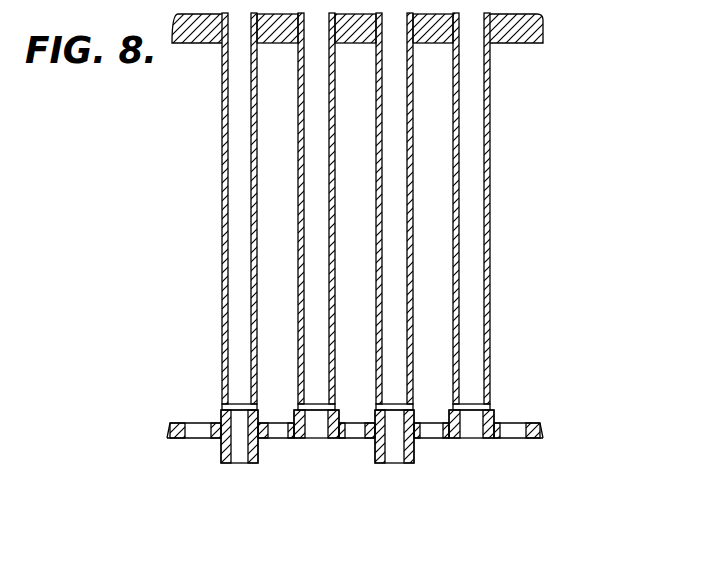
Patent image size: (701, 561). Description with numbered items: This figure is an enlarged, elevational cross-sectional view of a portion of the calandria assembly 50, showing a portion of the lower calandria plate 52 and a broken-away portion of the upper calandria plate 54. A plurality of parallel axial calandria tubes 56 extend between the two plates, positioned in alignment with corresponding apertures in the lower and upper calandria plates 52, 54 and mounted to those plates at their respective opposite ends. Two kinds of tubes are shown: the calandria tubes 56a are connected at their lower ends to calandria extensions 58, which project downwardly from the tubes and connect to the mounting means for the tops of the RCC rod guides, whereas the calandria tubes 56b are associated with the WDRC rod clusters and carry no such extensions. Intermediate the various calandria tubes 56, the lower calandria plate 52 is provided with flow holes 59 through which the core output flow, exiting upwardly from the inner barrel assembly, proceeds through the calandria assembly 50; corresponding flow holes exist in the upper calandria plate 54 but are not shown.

The calandria assembly 50 is at (542, 167).
The lower calandria plate 52 is at (540, 428).
The upper calandria plate 54 is at (543, 36).
The calandria tubes 56 is at (490, 110).
The calandria tubes (RCC-associated) 56a is at (222, 307).
The calandria tubes (WDRC-associated) 56b is at (333, 285).
The calandria extensions 58 is at (414, 453).
The flow holes 59 is at (352, 434).